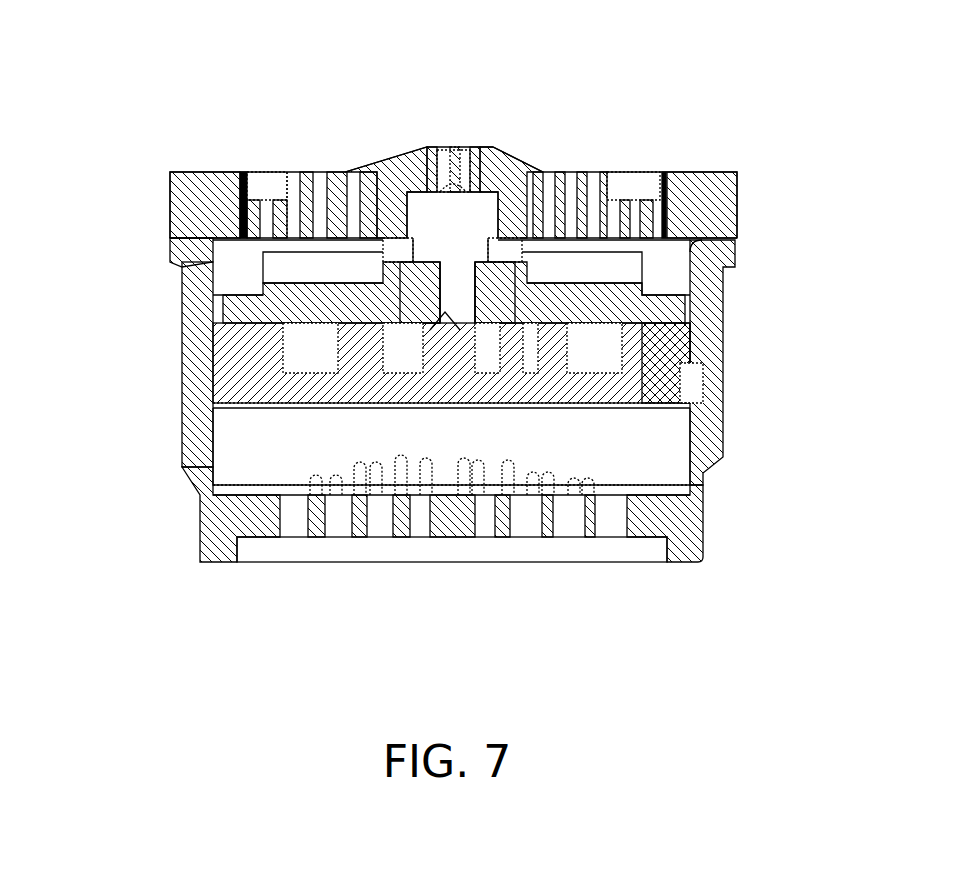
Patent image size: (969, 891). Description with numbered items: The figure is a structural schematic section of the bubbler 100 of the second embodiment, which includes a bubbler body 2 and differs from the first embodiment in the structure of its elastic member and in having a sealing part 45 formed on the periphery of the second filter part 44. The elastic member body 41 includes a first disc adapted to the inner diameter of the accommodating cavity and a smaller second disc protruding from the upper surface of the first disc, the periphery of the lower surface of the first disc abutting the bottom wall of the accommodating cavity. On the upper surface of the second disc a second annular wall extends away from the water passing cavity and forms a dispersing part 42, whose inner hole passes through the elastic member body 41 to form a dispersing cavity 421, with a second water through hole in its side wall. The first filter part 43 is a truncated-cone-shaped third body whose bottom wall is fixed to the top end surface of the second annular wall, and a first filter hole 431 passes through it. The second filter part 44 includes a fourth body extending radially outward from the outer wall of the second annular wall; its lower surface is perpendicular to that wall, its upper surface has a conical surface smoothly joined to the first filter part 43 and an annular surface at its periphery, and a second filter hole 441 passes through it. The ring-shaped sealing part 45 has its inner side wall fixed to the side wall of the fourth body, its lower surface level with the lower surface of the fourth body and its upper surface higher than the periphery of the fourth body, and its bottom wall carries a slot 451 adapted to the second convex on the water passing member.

The bubbler 100 is at (648, 77).
The bubbler body 2 is at (223, 528).
The elastic member body 41 is at (620, 308).
The dispersing part 42 is at (390, 225).
The dispersing cavity 421 is at (430, 296).
The first filter part 43 is at (403, 163).
The first filter hole 431 is at (482, 160).
The second filter part 44 is at (307, 193).
The second filter hole 441 is at (205, 160).
The sealing part 45 is at (698, 198).
The slot 451 is at (718, 238).